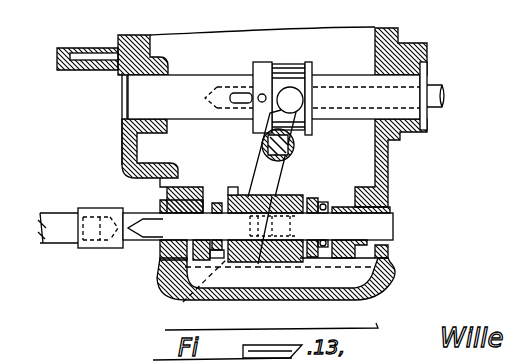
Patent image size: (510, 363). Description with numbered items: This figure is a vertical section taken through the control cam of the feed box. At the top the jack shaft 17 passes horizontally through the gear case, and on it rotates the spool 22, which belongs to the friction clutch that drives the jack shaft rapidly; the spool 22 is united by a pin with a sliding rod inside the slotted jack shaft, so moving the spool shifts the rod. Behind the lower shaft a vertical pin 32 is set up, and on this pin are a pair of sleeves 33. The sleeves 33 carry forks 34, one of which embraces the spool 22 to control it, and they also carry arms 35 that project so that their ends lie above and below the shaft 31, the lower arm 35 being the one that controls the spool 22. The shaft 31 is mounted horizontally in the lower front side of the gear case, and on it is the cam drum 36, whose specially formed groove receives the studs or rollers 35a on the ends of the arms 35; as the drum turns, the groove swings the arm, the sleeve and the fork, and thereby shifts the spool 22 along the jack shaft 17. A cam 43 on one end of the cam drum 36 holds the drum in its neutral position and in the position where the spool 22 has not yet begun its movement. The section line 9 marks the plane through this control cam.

The input shaft 9 is at (284, 78).
The jack shaft 17 is at (193, 104).
The spool 22 is at (265, 70).
The shaft 31 is at (372, 222).
The vertical pin 32 is at (263, 143).
The sleeves 33 is at (294, 148).
The forks 34 is at (289, 108).
The arms 35 is at (266, 182).
The studs or rollers 35a is at (196, 289).
The cam drum 36 is at (297, 194).
The cam 43 is at (231, 187).